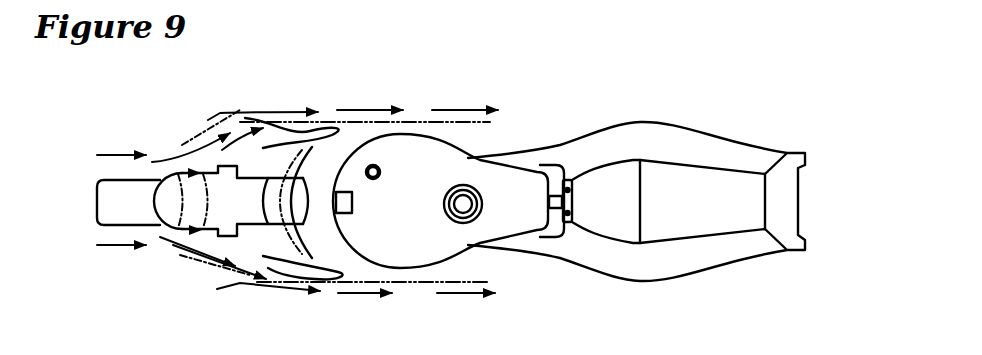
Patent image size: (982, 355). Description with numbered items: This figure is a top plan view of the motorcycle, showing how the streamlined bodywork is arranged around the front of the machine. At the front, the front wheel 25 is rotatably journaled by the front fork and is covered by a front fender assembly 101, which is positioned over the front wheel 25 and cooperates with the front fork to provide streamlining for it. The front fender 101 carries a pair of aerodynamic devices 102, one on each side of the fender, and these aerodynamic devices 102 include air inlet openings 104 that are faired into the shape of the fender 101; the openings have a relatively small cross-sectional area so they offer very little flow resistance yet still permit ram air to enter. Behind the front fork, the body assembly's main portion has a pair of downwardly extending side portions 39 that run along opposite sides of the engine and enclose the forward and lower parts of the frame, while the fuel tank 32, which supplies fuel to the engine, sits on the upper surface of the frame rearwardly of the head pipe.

The front wheel 25 is at (104, 205).
The fuel tank 32 is at (433, 256).
The side portions 39 is at (416, 122).
The front fender assembly 101 is at (227, 178).
The aerodynamic devices 102 is at (156, 124).
The air inlet openings 104 is at (192, 172).